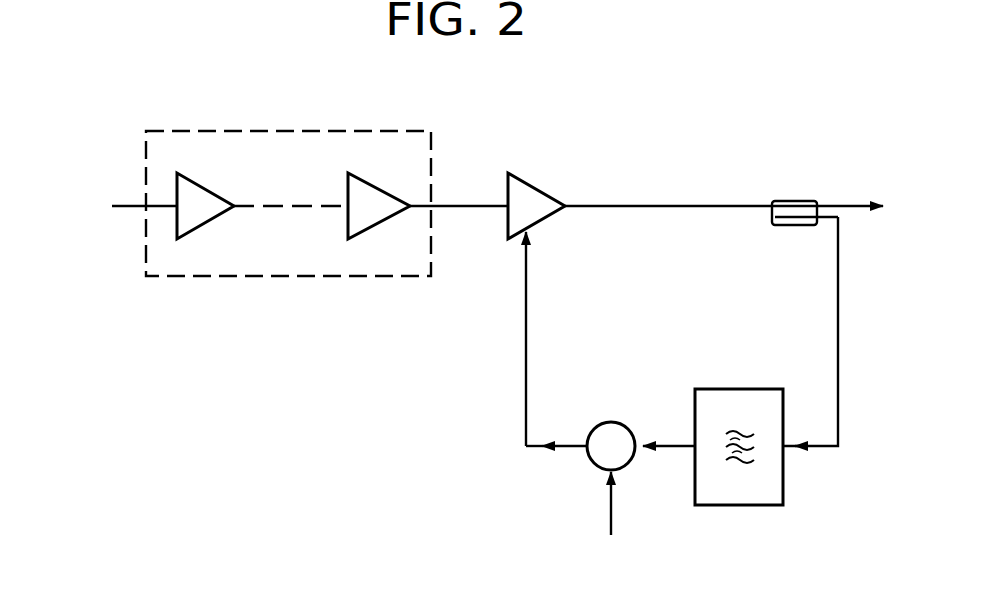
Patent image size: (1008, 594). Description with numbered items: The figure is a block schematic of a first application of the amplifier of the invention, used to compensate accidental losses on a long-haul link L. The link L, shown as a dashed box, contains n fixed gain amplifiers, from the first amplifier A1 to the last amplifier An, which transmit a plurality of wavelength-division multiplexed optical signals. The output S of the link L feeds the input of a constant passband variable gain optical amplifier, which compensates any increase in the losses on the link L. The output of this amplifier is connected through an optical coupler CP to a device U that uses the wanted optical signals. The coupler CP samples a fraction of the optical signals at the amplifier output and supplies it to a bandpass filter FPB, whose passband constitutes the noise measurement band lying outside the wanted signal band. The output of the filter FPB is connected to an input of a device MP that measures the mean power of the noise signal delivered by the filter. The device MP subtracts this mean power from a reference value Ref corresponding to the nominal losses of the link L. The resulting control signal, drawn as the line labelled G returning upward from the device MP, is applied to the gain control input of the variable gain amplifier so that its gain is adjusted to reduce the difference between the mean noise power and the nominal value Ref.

The long-haul link L is at (296, 131).
The fixed gain amplifier A1 is at (200, 193).
The fixed gain amplifier An is at (365, 193).
The output of the link S is at (476, 203).
The optical coupler CP is at (794, 200).
The device that uses the wanted optical signals U is at (862, 208).
The gain control signal G is at (526, 337).
The device for measuring the mean power MP is at (612, 427).
The bandpass filter FPB is at (740, 394).
The reference value Ref is at (614, 522).